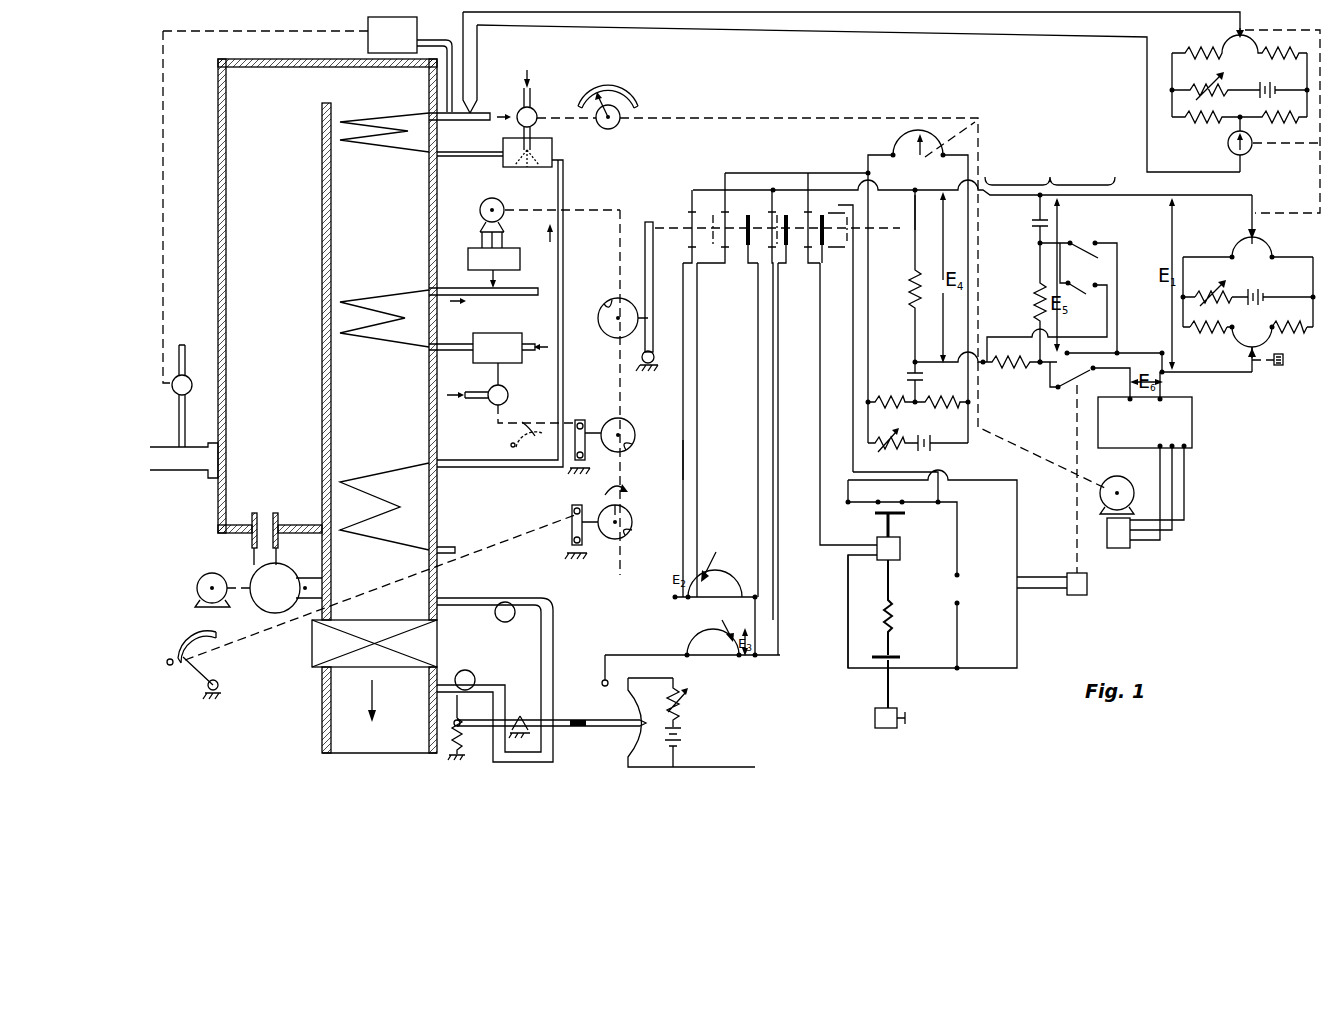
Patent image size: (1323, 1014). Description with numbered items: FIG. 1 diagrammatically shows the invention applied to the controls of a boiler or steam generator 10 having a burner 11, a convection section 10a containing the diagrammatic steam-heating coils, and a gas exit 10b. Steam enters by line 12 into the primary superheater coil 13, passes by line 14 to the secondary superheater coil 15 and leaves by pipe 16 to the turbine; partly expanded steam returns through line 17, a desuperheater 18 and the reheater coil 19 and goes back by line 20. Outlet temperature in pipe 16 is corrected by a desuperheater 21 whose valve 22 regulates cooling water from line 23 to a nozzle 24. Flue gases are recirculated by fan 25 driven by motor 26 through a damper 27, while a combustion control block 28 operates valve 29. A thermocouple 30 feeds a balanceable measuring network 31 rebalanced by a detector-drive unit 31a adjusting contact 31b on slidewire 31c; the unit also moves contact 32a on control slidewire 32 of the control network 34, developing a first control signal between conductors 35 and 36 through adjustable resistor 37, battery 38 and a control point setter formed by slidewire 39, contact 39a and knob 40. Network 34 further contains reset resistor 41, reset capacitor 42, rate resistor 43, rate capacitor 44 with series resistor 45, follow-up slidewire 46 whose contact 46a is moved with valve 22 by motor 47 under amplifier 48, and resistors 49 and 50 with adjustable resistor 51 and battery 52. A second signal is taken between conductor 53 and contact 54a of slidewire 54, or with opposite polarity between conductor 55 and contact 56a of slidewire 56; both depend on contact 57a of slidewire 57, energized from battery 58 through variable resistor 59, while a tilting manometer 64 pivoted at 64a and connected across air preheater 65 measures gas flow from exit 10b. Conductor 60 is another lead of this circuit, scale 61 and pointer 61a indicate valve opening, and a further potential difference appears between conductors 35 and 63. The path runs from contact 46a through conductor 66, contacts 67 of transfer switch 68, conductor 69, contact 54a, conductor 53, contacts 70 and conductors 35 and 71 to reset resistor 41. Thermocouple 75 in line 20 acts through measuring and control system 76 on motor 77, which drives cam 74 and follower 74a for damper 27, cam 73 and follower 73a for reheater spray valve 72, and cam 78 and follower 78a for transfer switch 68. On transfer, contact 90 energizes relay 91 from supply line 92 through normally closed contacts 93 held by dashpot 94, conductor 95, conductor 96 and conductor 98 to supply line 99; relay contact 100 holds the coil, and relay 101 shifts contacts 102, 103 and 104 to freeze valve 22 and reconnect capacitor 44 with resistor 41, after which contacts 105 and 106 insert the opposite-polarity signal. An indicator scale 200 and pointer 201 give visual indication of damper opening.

The steam generator 10 is at (286, 256).
The convection section 10a is at (398, 404).
The exit 10b is at (330, 700).
The burner 11 is at (216, 458).
The line 12 is at (443, 545).
The primary superheater coil 13 is at (347, 533).
The line 14 is at (478, 468).
The secondary superheater coil 15 is at (373, 143).
The pipe 16 is at (478, 108).
The line 17 is at (530, 352).
The desuperheater 18 is at (497, 333).
The reheater coil 19 is at (370, 300).
The line 20 is at (522, 286).
The desuperheater 21 is at (550, 146).
The valve 22 is at (534, 110).
The line 23 is at (529, 86).
The nozzle 24 is at (527, 168).
The recirculating fan 25 is at (262, 572).
The motor 26 is at (203, 578).
The damper 27 is at (305, 580).
The combustion control system 28 is at (406, 46).
The valve 29 is at (186, 378).
The thermocouple 30 is at (463, 77).
The balanceable measuring network 31 is at (1200, 82).
The detector-drive unit 31a is at (1227, 144).
The contact 31b is at (1234, 34).
The slidewire 31c is at (1240, 56).
The control slidewire 32 is at (1236, 246).
The contact 32a is at (1258, 229).
The control network 34 is at (1062, 174).
The conductor 35 is at (692, 187).
The conductor 36 is at (1224, 375).
The adjustable resistor 37 is at (1206, 292).
The battery 38 is at (1264, 294).
The slidewire 39 is at (1270, 330).
The adjustable contact 39a is at (1248, 352).
The knob 40 is at (1283, 366).
The reset resistor 41 is at (912, 290).
The reset capacitor 42 is at (908, 370).
The rate resistor 43 is at (1005, 368).
The rate capacitor 44 is at (1031, 223).
The resistor 45 is at (1033, 301).
The follow-up slidewire 46 is at (920, 128).
The adjustable contact 46a is at (915, 150).
The motor 47 is at (1123, 478).
The amplifier 48 is at (1195, 434).
The resistor 49 is at (888, 396).
The resistor 50 is at (944, 396).
The adjustable resistor 51 is at (892, 450).
The battery 52 is at (935, 450).
The conductor 53 is at (682, 450).
The slidewire 54 is at (726, 586).
The contact 54a is at (719, 556).
The conductor 55 is at (766, 655).
The slidewire 56 is at (712, 660).
The contact 56a is at (716, 619).
The slidewire 57 is at (638, 733).
The movable contact 57a is at (630, 728).
The battery 58 is at (690, 737).
The variable resistor 59 is at (687, 702).
The conductor 60 is at (779, 374).
The scale 61 is at (636, 100).
The pointer 61a is at (603, 94).
The conductor 63 is at (1049, 385).
The tilting manometer 64 is at (536, 664).
The pivot 64a is at (528, 720).
The air preheater 65 is at (312, 647).
The conductor 66 is at (833, 173).
The contacts 67 is at (714, 214).
The transfer switch 68 is at (757, 274).
The conductor 69 is at (698, 410).
The contacts 70 is at (690, 215).
The conductor 71 is at (913, 215).
The control valve 72 is at (508, 397).
The cam 73 is at (630, 428).
The cam follower 73a is at (582, 420).
The cam 74 is at (625, 532).
The cam follower 74a is at (572, 530).
The thermocouple 75 is at (491, 287).
The measuring and control system 76 is at (515, 251).
The motor 77 is at (480, 205).
The cam 78 is at (606, 304).
The cam follower 78a is at (646, 224).
The contact 90 is at (829, 251).
The relay 91 is at (900, 548).
The supply line 92 is at (959, 604).
The contacts 93 is at (892, 656).
The dashpot 94 is at (875, 716).
The conductor 95 is at (848, 592).
The conductor 96 is at (820, 440).
The conductor 98 is at (938, 492).
The supply line 99 is at (959, 573).
The contact 100 is at (899, 515).
The relay 101 is at (1087, 587).
The contact 102 is at (1078, 376).
The contact 103 is at (1090, 285).
The contact 104 is at (1082, 244).
The contacts 105 is at (776, 215).
The contacts 106 is at (807, 212).
The indicator scale 200 is at (186, 650).
The pointer 201 is at (196, 673).